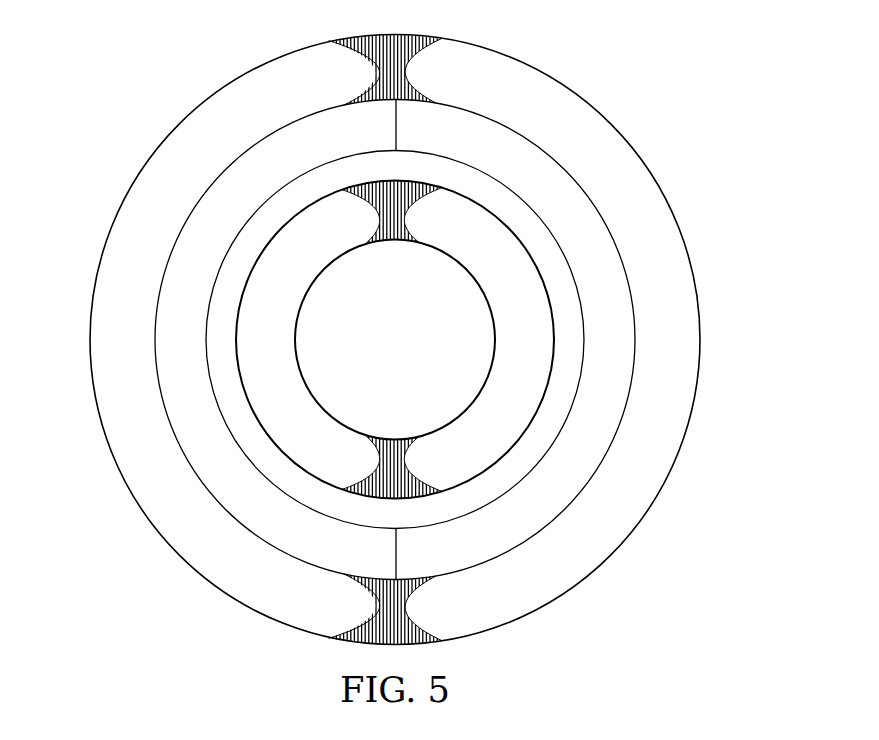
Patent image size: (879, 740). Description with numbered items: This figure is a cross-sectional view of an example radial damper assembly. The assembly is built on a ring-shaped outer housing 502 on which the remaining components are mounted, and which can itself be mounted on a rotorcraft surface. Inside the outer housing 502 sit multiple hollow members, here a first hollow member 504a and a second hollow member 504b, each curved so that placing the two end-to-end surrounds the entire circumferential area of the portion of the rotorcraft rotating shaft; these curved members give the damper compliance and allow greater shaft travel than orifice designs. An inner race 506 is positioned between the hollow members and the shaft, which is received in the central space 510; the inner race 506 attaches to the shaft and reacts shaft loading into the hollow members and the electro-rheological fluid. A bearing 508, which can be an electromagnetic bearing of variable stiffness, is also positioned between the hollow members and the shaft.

The outer housing 502 is at (235, 95).
The first hollow member 504a is at (453, 127).
The second hollow member 504b is at (338, 127).
The inner race 506 is at (568, 356).
The bearing 508 is at (470, 237).
The space 510 is at (347, 303).